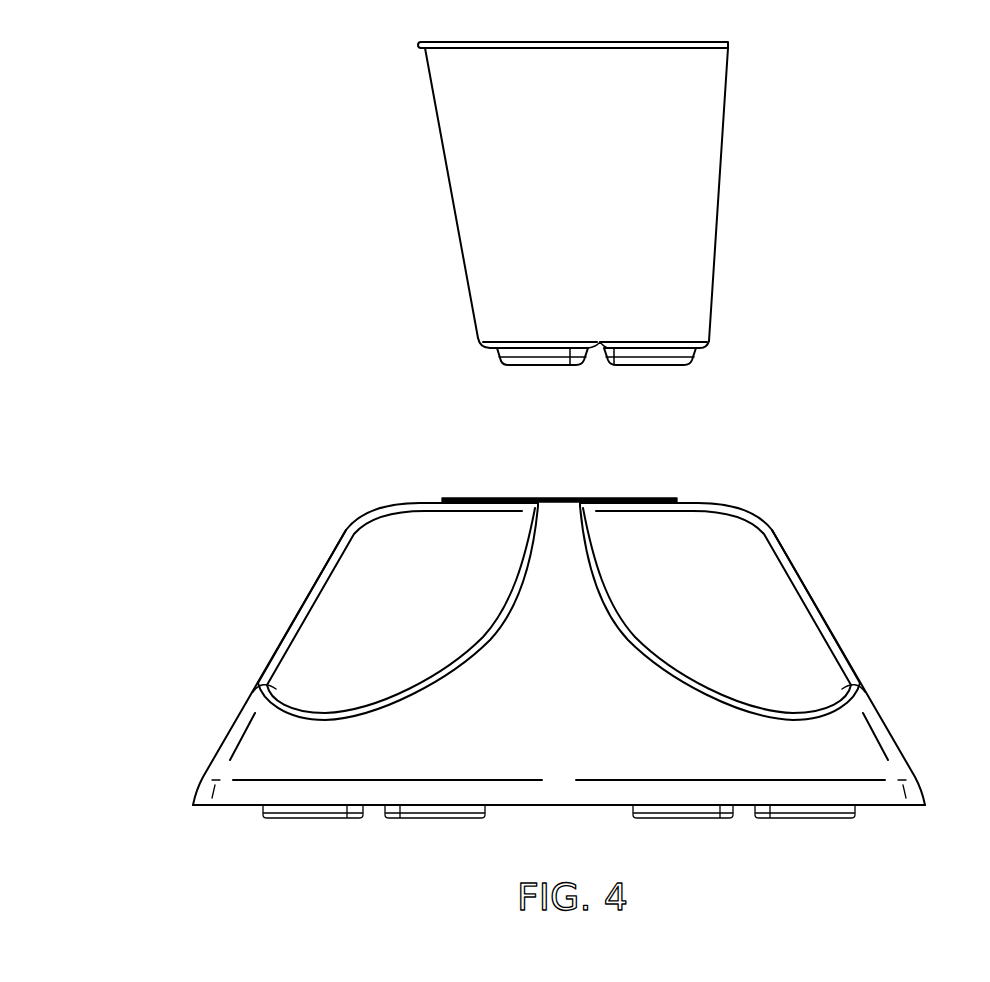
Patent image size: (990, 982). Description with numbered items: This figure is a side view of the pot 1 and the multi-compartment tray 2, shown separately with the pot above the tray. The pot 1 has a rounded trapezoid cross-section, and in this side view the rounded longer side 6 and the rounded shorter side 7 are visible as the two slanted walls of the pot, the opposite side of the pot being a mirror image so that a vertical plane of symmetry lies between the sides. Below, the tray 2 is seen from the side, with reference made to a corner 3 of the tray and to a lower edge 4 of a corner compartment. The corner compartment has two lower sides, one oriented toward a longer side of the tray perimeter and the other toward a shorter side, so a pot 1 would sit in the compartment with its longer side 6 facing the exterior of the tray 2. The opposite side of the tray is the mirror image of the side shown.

The pot 1 is at (353, 118).
The multi-compartment tray 2 is at (828, 540).
The corner compartment 3 is at (266, 684).
The lower side 4 is at (797, 725).
The rounded longer side 6 is at (697, 212).
The rounded shorter side 7 is at (462, 243).